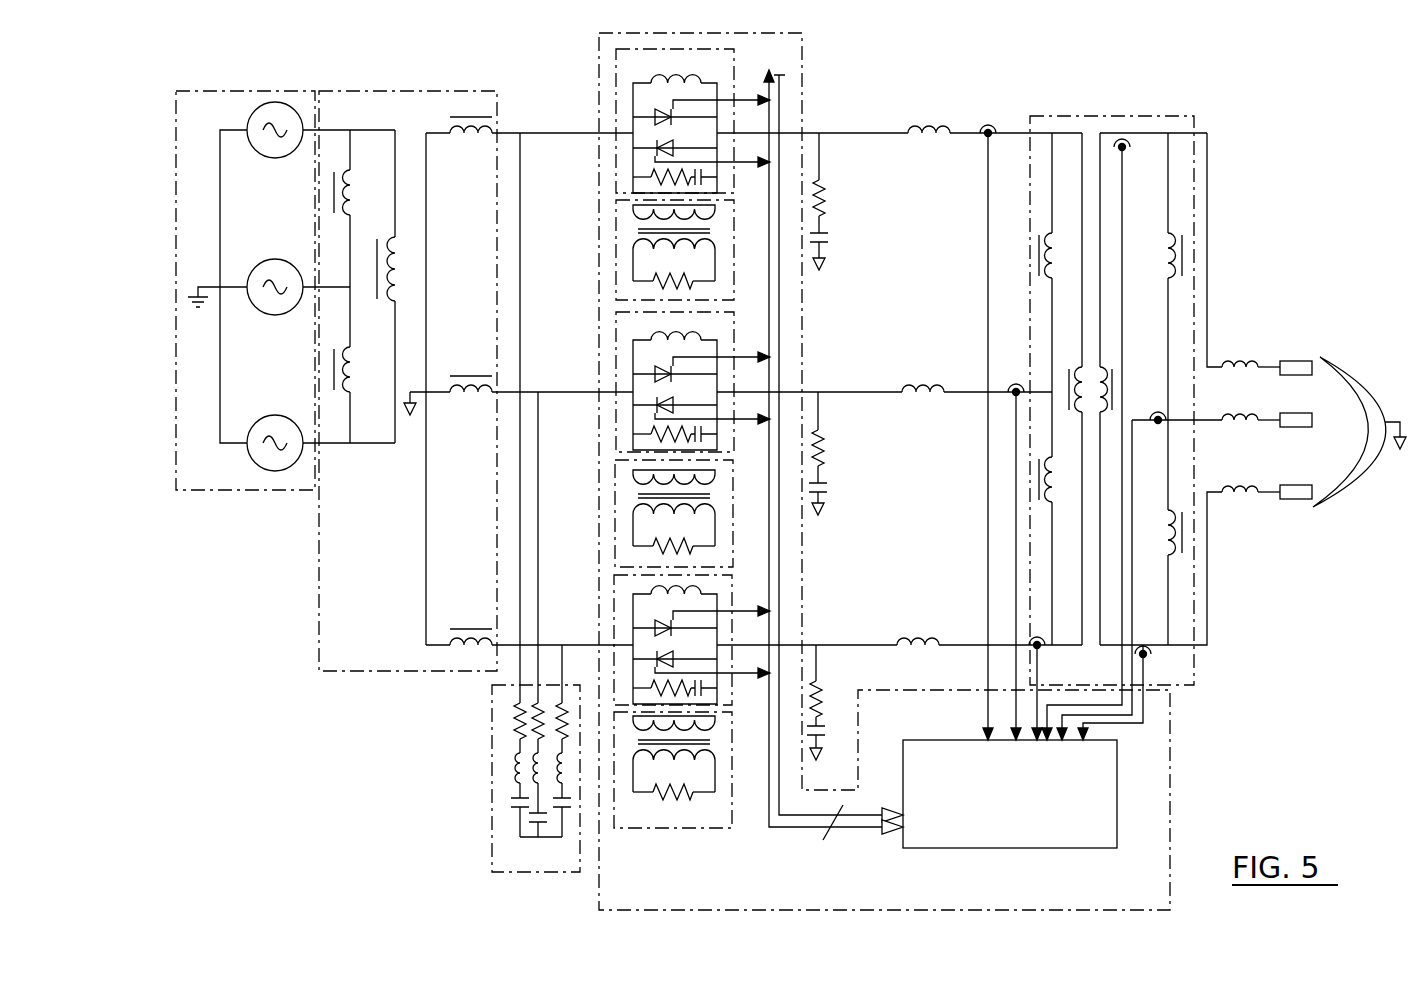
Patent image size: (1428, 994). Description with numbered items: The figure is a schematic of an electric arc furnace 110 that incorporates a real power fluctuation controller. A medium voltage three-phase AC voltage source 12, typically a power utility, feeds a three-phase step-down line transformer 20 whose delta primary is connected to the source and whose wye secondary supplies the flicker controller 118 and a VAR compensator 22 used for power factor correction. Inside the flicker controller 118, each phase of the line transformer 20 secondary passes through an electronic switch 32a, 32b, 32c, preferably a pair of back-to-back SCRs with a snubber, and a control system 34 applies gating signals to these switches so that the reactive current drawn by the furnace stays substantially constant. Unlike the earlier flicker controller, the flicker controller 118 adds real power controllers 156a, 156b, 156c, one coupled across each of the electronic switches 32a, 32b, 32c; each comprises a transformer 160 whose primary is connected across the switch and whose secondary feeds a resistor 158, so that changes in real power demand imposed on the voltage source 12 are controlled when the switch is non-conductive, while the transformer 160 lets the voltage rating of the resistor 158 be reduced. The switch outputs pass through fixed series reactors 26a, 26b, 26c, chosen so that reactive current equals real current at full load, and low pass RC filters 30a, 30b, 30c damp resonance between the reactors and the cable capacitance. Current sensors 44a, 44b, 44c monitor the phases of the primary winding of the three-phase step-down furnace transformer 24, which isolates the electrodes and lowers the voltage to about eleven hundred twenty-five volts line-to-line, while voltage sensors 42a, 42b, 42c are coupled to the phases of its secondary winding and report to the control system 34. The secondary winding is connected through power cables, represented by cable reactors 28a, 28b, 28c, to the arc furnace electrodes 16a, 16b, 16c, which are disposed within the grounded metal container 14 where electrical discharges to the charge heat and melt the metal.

The three-phase AC voltage source 12 is at (243, 492).
The electric arc furnace 110 is at (247, 611).
The line transformer 20 is at (385, 672).
The VAR compensator 22 is at (462, 746).
The electronic switch 32a is at (617, 65).
The electronic switch 32b is at (617, 325).
The electronic switch 32c is at (613, 597).
The real power controller 156a is at (617, 205).
The real power controller 156b is at (615, 470).
The real power controller 156c is at (645, 830).
The transformer 160 is at (610, 246).
The resistor 158 is at (610, 270).
The fixed series reactor 26a is at (925, 112).
The fixed series reactor 26b is at (923, 365).
The fixed series reactor 26c is at (897, 623).
The low pass RC filter 30a is at (822, 200).
The low pass RC filter 30b is at (821, 462).
The low pass RC filter 30c is at (820, 690).
The current sensor 44a is at (991, 125).
The current sensor 44b is at (1016, 383).
The current sensor 44c is at (1036, 637).
The furnace transformer 24 is at (1197, 161).
The voltage sensor 42a is at (1130, 147).
The voltage sensor 42b is at (1156, 412).
The voltage sensor 42c is at (1151, 655).
The cable reactor 28a is at (1232, 356).
The cable reactor 28b is at (1255, 410).
The cable reactor 28c is at (1225, 490).
The arc furnace electrode 16a is at (1290, 360).
The arc furnace electrode 16b is at (1297, 413).
The arc furnace electrode 16c is at (1297, 485).
The metal container 14 is at (1355, 370).
The control system 34 is at (920, 738).
The flicker controller 118 is at (1172, 762).